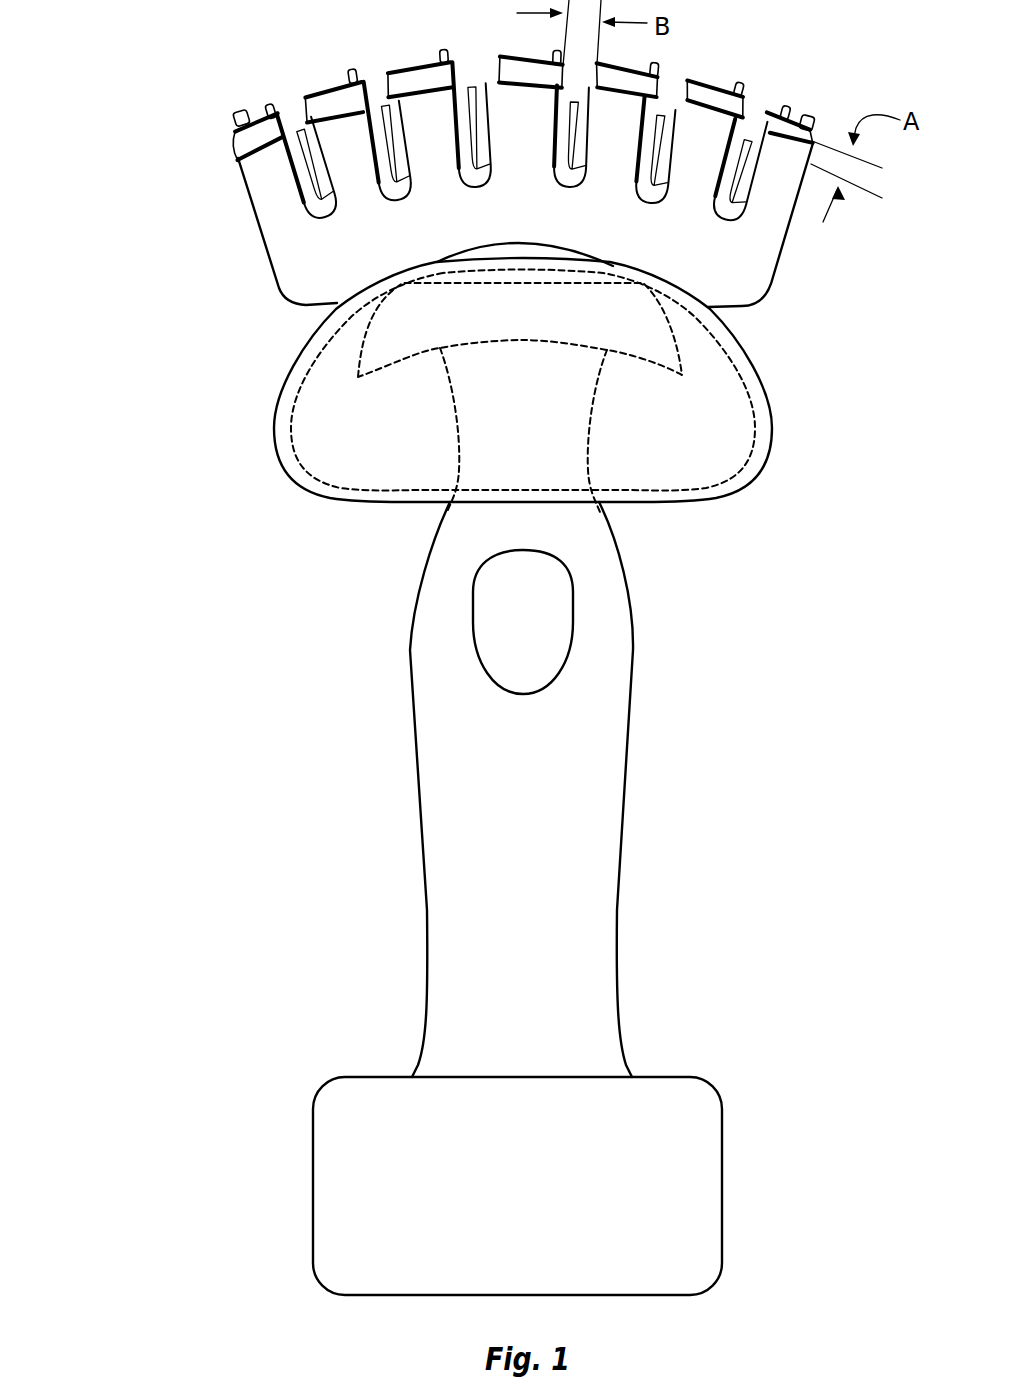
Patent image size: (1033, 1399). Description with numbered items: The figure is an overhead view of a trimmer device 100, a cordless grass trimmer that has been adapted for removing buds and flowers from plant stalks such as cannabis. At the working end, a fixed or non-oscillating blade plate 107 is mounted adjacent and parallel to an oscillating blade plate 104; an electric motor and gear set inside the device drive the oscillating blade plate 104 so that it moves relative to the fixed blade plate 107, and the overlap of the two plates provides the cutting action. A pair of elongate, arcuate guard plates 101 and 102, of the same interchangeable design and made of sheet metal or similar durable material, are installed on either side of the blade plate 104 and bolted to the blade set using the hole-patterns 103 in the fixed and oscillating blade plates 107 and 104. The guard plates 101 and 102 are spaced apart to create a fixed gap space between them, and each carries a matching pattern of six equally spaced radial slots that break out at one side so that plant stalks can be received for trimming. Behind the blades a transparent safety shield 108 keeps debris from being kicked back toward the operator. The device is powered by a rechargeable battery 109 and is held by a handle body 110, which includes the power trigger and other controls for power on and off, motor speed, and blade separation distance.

The trimmer device 100 is at (689, 641).
The guard plate 101 is at (266, 128).
The guard plate 102 is at (708, 266).
The hole-patterns 103 is at (478, 192).
The oscillating blade plate 104 is at (482, 192).
The fixed blade plate 107 is at (660, 62).
The safety shield 108 is at (280, 388).
The rechargeable battery 109 is at (313, 1186).
The handle body 110 is at (424, 855).